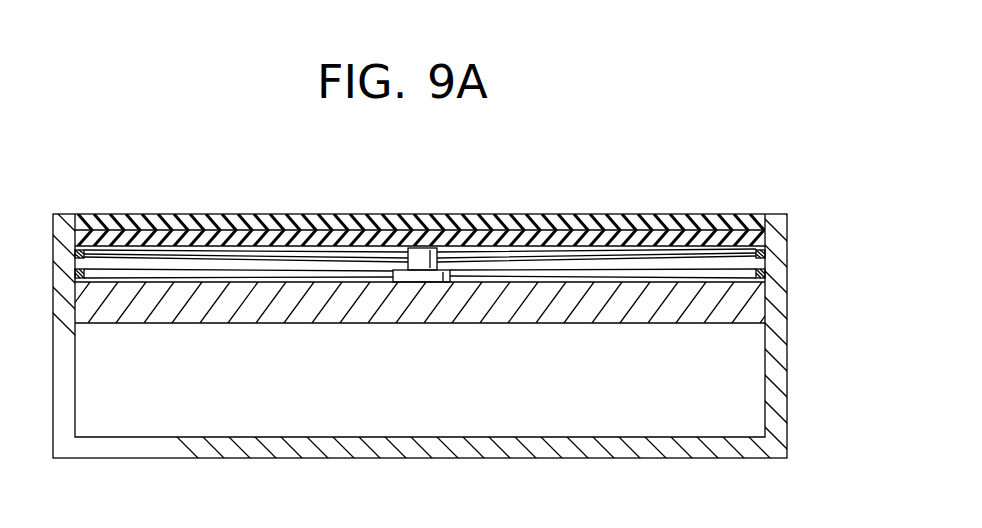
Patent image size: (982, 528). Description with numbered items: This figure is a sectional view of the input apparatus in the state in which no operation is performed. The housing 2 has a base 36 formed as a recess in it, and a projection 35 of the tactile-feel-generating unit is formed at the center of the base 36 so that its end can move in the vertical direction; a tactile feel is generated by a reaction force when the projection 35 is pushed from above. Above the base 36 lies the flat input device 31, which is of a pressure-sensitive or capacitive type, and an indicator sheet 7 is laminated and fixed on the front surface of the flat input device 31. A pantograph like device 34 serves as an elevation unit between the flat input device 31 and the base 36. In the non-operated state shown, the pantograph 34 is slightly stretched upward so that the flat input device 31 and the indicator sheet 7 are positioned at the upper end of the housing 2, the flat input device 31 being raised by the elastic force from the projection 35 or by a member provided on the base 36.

The housing 2 is at (777, 382).
The indicator sheet 7 is at (722, 214).
The flat input device 31 is at (753, 242).
The pantograph like device 34 is at (637, 275).
The projection 35 is at (433, 282).
The base 36 is at (743, 297).